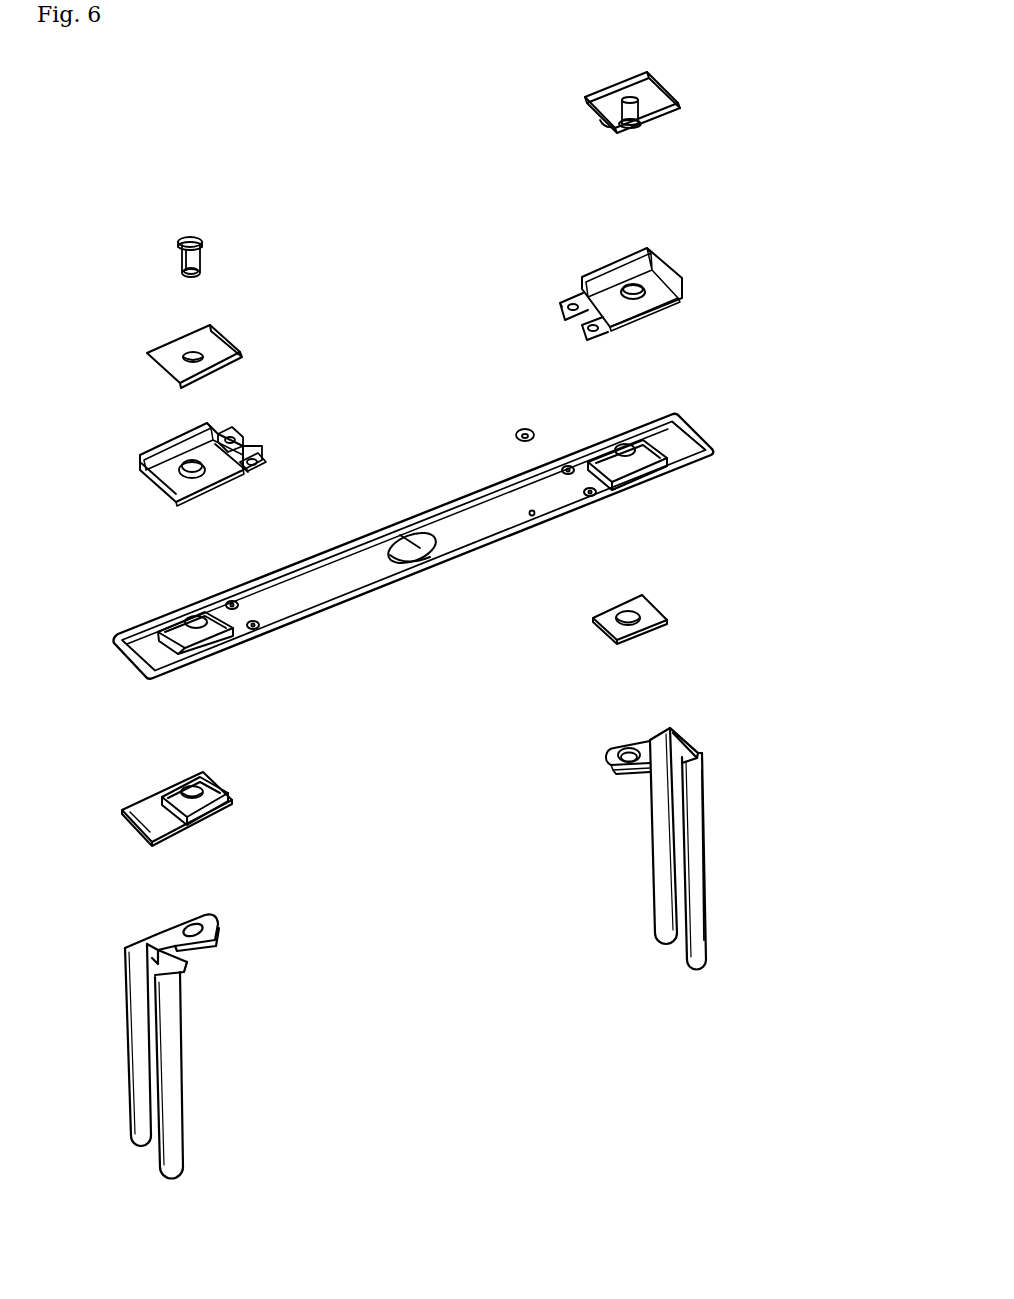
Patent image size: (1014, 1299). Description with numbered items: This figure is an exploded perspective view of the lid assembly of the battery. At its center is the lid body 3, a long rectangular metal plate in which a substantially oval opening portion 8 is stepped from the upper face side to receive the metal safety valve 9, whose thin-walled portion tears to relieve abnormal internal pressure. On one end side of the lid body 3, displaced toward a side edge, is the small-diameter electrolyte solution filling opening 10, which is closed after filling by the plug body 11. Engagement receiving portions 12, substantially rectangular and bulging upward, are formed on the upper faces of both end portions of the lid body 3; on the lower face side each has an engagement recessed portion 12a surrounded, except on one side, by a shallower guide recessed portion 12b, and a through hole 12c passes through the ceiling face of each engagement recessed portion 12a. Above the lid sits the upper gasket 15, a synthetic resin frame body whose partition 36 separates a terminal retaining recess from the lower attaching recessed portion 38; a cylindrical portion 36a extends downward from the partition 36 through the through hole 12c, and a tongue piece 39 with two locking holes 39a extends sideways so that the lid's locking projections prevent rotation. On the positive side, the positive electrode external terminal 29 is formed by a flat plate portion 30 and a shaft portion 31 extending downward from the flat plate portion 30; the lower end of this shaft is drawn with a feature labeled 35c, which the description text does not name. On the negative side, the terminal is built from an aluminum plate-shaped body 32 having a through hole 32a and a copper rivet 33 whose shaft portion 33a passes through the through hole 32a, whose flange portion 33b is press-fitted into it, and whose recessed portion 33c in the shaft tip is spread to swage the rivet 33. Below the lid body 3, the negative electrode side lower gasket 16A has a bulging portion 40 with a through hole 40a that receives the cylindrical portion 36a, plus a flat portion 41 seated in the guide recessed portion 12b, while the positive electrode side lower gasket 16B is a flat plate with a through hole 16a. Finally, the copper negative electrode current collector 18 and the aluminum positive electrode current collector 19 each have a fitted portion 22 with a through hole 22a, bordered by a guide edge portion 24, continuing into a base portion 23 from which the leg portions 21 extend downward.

The lid body 3 is at (348, 582).
The opening portion 8 is at (418, 562).
The safety valve 9 is at (408, 545).
The electrolyte solution filling opening 10 is at (533, 516).
The plug body 11 is at (524, 430).
The engagement receiving portion 12 is at (168, 614).
The engagement recessed portion 12a is at (640, 483).
The guide recessed portion 12b is at (677, 460).
The through hole 12c is at (620, 462).
The upper gasket 15 is at (590, 275).
The negative electrode side lower gasket 16A is at (140, 800).
The positive electrode side lower gasket 16B is at (657, 603).
The through hole 16a is at (627, 626).
The negative electrode current collector 18 is at (180, 1053).
The positive electrode current collector 19 is at (687, 973).
The leg portion 21 is at (703, 820).
The fitted portion 22 is at (618, 748).
The through hole 22a is at (633, 772).
The base portion 23 is at (690, 767).
The guide edge portion 24 is at (612, 771).
The positive electrode external terminal 29 is at (585, 98).
The flat plate portion 30 is at (600, 109).
The shaft portion 31 is at (606, 128).
The plate-shaped body 32 is at (160, 342).
The through hole 32a is at (200, 364).
The rivet 33 is at (180, 258).
The shaft portion 33a is at (197, 255).
The flange portion 33b is at (203, 240).
The recessed portion 33c is at (193, 278).
The flange 35c is at (633, 130).
The partition 36 is at (152, 482).
The cylindrical portion 36a is at (223, 483).
The lower attaching recessed portion 38 is at (175, 503).
The tongue piece 39 is at (230, 440).
The locking hole 39a is at (248, 464).
The bulging portion 40 is at (222, 783).
The through hole 40a is at (200, 807).
The flat portion 41 is at (150, 828).